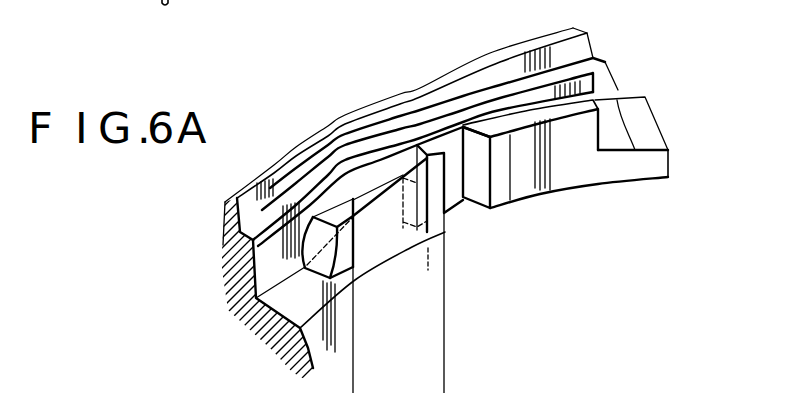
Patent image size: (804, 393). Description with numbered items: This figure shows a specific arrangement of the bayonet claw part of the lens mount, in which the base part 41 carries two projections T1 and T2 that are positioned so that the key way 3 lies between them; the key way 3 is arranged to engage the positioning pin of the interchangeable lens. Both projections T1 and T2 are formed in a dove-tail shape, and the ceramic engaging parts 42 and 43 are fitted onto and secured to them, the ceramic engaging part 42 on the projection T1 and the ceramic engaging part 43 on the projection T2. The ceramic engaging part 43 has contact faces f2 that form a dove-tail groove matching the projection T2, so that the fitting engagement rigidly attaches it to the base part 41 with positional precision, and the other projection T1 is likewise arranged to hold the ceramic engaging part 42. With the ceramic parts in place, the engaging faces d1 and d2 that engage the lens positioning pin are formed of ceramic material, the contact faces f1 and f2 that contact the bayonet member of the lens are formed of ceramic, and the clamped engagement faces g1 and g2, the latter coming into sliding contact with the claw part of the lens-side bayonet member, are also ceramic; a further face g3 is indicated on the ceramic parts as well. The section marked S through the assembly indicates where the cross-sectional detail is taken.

The base part 41 is at (620, 170).
The ceramic engaging part 42 is at (507, 113).
The ceramic engaging part 43 is at (298, 204).
The key way 3 is at (455, 210).
The projection T1 is at (582, 165).
The projection T2 is at (372, 230).
The contact face f1 is at (612, 132).
The contact face f2 is at (433, 212).
The engaging face g1 is at (552, 108).
The engaging face g2 is at (372, 205).
The third groove g3 is at (641, 5).
The engaging face d1 is at (478, 195).
The engaging face d2 is at (430, 283).
The section line S is at (340, 130).